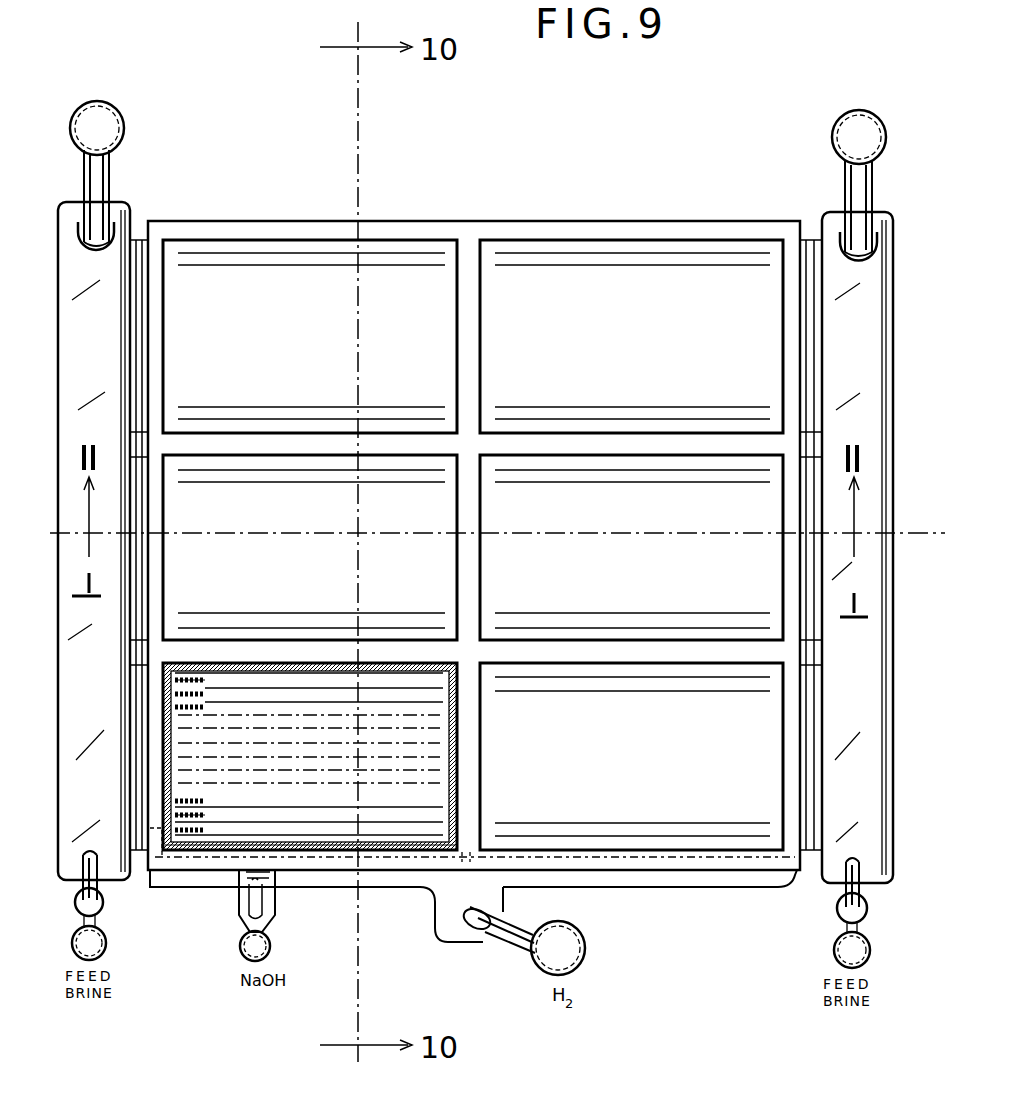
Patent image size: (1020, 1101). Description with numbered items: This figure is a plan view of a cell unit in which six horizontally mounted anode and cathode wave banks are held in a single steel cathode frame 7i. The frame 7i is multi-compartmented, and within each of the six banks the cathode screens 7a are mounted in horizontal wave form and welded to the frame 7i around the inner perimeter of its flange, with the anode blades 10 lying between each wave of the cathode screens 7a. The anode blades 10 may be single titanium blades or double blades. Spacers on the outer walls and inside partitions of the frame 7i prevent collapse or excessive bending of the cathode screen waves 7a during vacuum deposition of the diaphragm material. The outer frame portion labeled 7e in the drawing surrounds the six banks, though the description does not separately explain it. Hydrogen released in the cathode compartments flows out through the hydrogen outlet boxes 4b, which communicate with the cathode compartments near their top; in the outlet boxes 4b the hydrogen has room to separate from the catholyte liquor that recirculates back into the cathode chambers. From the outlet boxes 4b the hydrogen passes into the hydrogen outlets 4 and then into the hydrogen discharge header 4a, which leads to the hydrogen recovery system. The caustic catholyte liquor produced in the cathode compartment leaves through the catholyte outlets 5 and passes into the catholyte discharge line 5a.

The hydrogen outlet 4 is at (516, 938).
The hydrogen discharge line 4a is at (586, 958).
The hydrogen outlet box 4b is at (683, 880).
The catholyte outlet 5 is at (268, 905).
The catholyte discharge line 5a is at (271, 950).
The cathode screen 7a is at (206, 832).
The cell frame 7e is at (703, 223).
The cathode frame 7i is at (516, 256).
The anode blade 10 is at (200, 833).